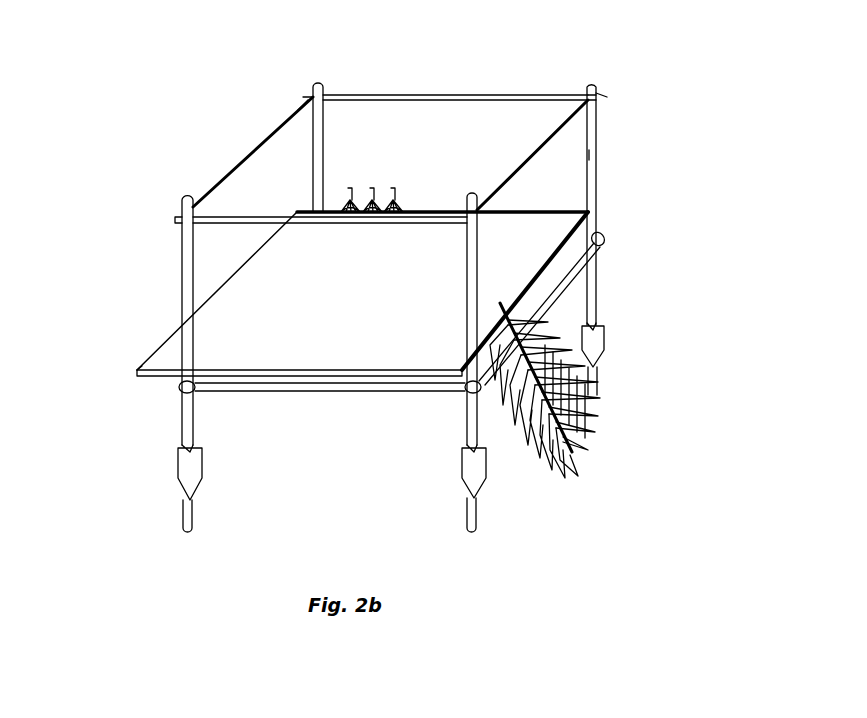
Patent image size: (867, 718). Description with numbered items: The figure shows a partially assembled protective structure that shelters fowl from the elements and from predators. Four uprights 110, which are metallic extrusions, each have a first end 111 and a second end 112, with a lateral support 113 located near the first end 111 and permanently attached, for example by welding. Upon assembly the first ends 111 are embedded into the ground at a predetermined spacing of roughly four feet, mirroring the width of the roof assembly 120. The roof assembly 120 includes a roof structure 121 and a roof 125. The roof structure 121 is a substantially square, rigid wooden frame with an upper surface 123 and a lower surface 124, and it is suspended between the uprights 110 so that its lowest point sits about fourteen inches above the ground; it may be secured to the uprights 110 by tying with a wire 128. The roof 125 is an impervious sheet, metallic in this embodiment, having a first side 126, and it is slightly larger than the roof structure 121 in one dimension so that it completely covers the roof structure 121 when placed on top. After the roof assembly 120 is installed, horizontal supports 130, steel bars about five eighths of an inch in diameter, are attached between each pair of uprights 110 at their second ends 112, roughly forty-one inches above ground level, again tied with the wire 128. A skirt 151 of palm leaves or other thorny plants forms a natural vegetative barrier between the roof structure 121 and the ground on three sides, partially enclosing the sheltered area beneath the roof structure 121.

The upright 110 is at (606, 151).
The first end 111 is at (606, 400).
The second end 112 is at (592, 93).
The lateral support 113 is at (198, 465).
The roof assembly 120 is at (382, 272).
The roof structure 121 is at (300, 386).
The upper surface 123 is at (218, 350).
The lower surface 124 is at (137, 373).
The roof 125 is at (520, 255).
The first side 126 is at (331, 300).
The wire 128 is at (308, 88).
The horizontal support 130 is at (402, 97).
The skirt 151 is at (393, 186).